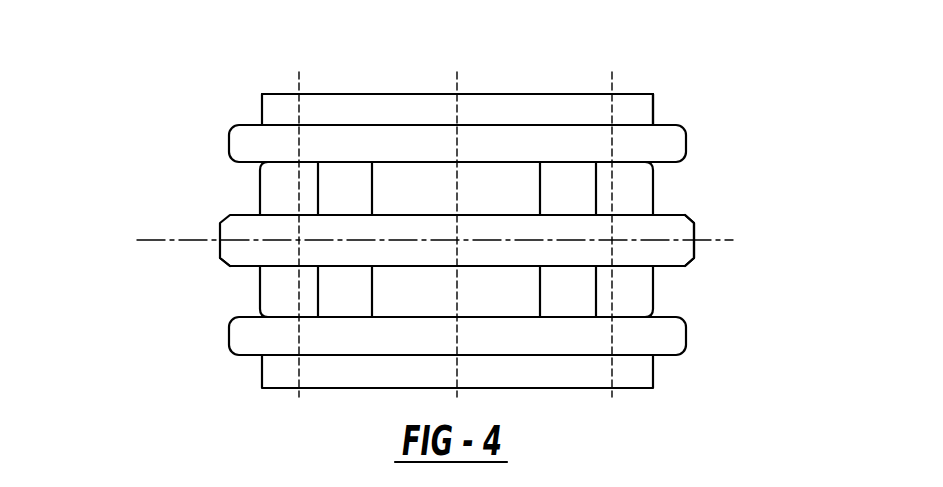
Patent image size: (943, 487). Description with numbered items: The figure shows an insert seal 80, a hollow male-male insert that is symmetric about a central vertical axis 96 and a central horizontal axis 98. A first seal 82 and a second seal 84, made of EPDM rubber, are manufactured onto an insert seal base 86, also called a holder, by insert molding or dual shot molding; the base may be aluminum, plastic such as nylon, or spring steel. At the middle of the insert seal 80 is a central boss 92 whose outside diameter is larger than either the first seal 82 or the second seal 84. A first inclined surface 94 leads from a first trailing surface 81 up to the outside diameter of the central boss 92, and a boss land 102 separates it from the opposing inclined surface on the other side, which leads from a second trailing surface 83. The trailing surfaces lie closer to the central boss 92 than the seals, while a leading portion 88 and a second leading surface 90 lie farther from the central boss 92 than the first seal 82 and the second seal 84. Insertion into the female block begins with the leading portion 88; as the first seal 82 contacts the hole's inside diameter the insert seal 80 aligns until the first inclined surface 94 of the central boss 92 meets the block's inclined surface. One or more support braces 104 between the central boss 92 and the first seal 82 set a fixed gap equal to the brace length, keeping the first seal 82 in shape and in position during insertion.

The insert seal 80 is at (116, 52).
The first trailing surface 81 is at (653, 198).
The first seal 82 is at (229, 147).
The second trailing surface 83 is at (653, 301).
The second seal 84 is at (228, 337).
The insert seal base 86 is at (298, 92).
The leading portion 88 is at (654, 110).
The second leading surface 90 is at (653, 372).
The central boss 92 is at (220, 223).
The first inclined surface 94 is at (690, 221).
The central vertical axis 96 is at (456, 100).
The central horizontal axis 98 is at (717, 240).
The boss land 102 is at (219, 258).
The support brace 104 is at (337, 179).